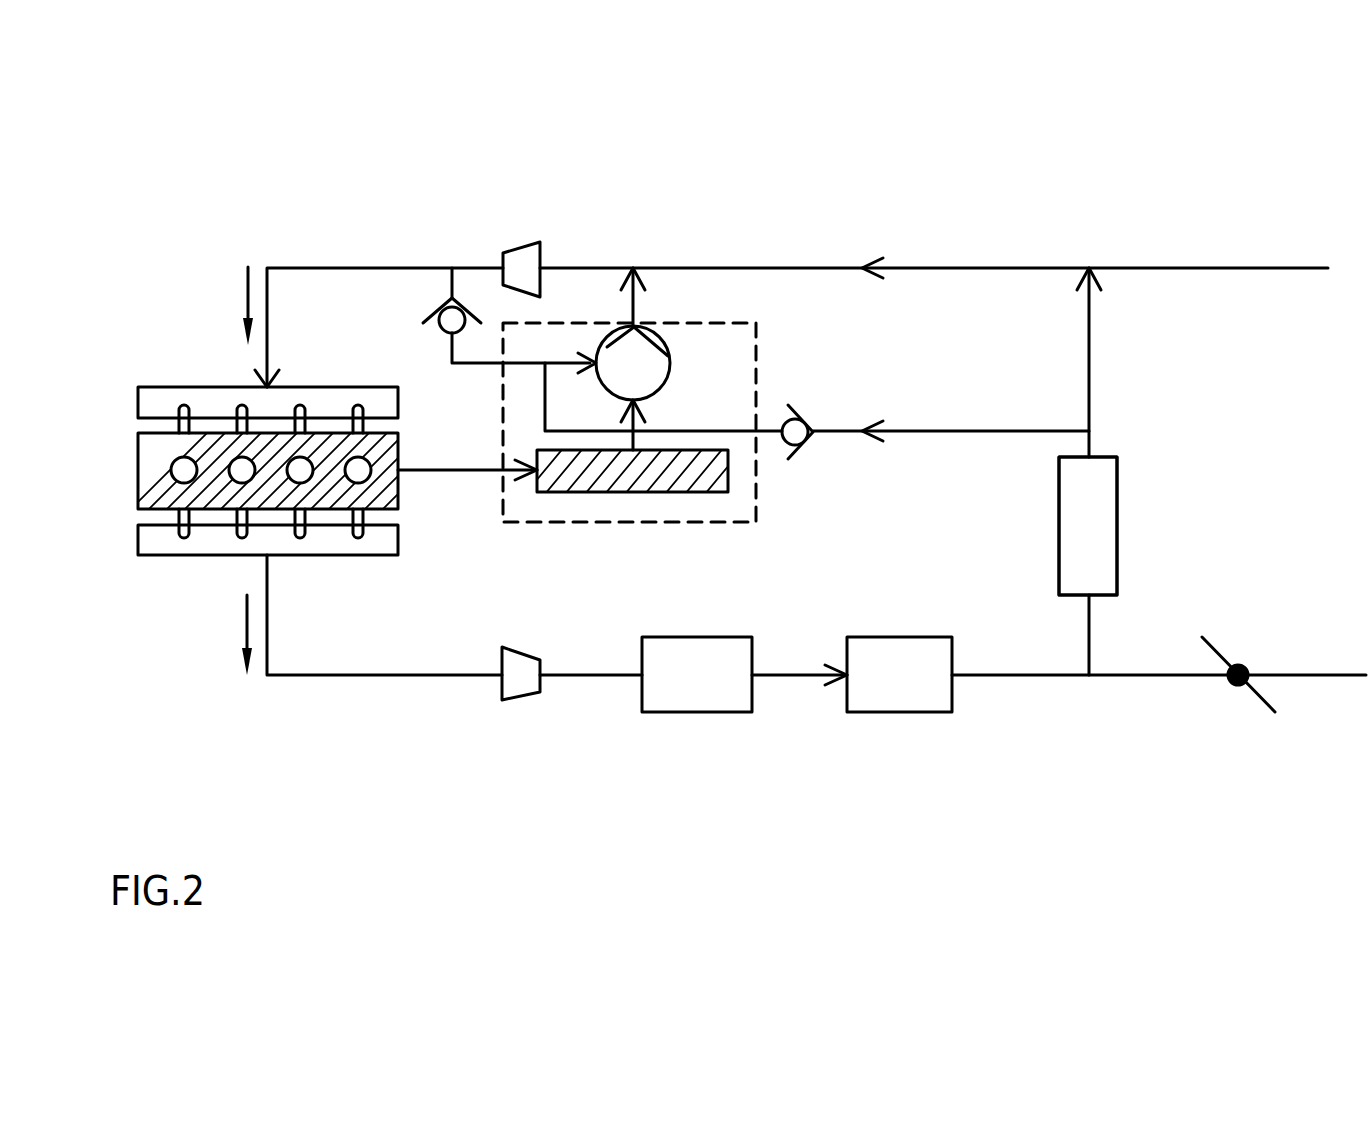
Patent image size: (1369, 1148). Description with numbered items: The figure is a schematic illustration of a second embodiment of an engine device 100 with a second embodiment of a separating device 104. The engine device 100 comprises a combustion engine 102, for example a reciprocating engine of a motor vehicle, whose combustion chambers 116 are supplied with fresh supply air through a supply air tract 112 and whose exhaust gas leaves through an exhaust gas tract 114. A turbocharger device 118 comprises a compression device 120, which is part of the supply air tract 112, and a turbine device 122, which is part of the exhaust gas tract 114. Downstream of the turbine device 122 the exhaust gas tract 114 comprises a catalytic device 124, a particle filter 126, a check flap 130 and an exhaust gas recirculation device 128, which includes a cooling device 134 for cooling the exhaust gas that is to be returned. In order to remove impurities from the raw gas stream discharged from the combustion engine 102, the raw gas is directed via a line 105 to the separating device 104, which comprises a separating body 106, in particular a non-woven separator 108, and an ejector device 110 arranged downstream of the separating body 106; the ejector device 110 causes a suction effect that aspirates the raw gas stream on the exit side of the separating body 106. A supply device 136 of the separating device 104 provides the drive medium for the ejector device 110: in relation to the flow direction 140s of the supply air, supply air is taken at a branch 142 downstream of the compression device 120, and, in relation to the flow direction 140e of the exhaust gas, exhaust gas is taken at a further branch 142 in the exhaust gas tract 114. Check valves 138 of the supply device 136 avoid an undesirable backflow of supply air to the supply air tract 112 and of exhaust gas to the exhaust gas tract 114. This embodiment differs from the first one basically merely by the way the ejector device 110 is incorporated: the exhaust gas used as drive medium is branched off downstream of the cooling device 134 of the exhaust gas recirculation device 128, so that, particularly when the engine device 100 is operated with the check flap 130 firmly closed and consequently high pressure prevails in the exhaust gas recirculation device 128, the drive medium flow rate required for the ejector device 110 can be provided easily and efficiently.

The engine device 100 is at (198, 180).
The combustion engine 102 is at (138, 450).
The separating device 104 is at (780, 340).
The line 105 is at (450, 475).
The separating body 106 is at (665, 483).
The non-woven separator 108 is at (585, 483).
The ejector device 110 is at (657, 358).
The supply air tract 112 is at (310, 245).
The exhaust gas tract 114 is at (317, 700).
The combustion chambers 116 is at (356, 485).
The turbocharger device 118 is at (473, 245).
The compression device 120 is at (540, 243).
The turbine device 122 is at (522, 687).
The catalytic device 124 is at (706, 700).
The particle filter 126 is at (900, 700).
The exhaust gas recirculation device 128 is at (1140, 558).
The check flap 130 is at (1223, 712).
The cooling device 134 is at (1102, 513).
The supply device 136 is at (404, 291).
The check valves 138 is at (443, 333).
The flow direction of the supply air 140s is at (247, 295).
The flow direction of the exhaust gas 140e is at (247, 622).
The branch 142 is at (452, 268).